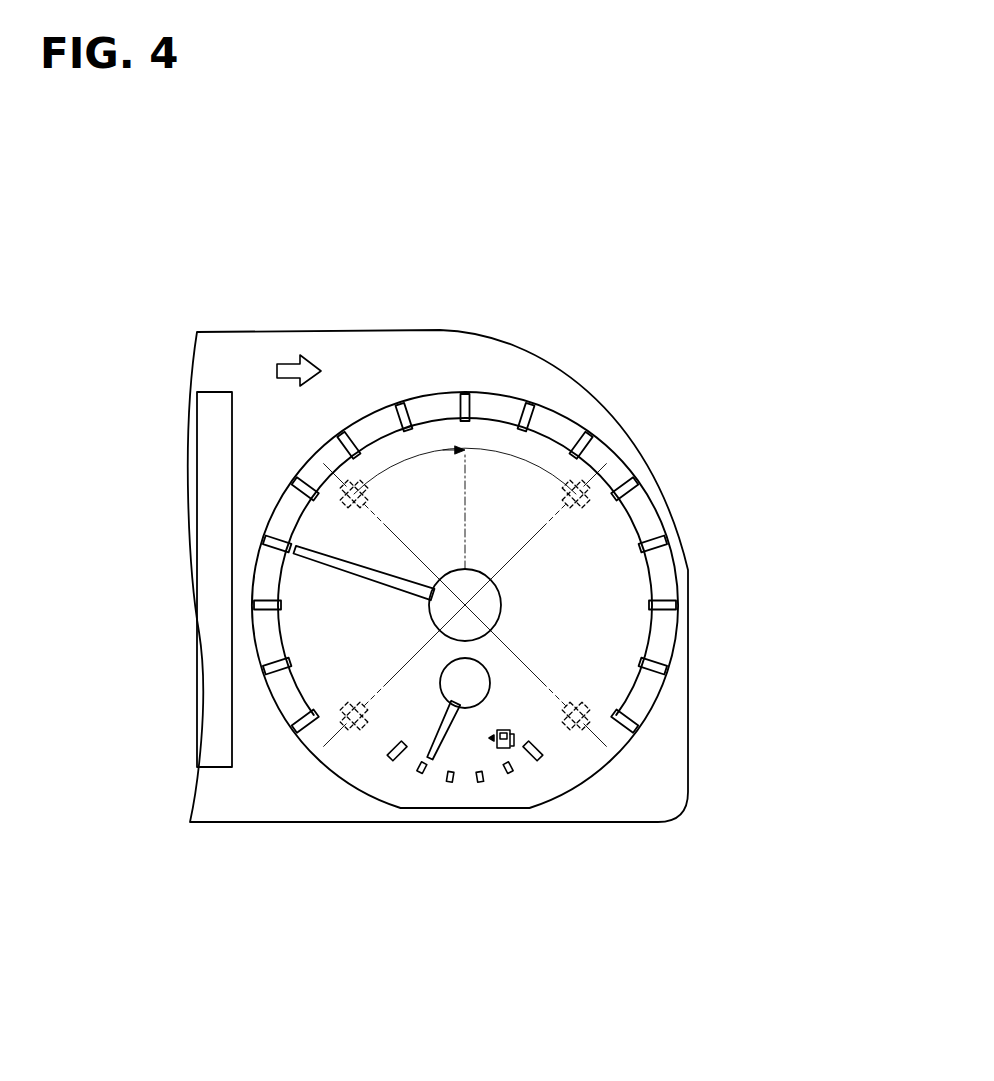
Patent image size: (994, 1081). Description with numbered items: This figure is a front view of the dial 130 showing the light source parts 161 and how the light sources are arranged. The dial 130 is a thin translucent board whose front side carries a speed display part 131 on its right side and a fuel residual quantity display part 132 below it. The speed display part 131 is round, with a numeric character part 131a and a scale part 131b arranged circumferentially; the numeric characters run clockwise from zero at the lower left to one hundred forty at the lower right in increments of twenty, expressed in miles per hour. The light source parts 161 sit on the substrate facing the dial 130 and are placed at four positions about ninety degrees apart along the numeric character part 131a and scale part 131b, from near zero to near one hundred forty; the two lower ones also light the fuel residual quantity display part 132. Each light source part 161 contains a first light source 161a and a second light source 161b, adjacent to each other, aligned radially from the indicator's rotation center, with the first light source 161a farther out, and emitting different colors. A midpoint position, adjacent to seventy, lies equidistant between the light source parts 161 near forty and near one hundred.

The dial 130 is at (258, 345).
The speed display part 131 is at (503, 537).
The numeric character part 131a is at (480, 440).
The scale part 131b is at (603, 448).
The fuel residual quantity display part 132 is at (438, 794).
The light source part 161 is at (512, 582).
The first light source 161a is at (482, 579).
The second light source 161b is at (516, 579).